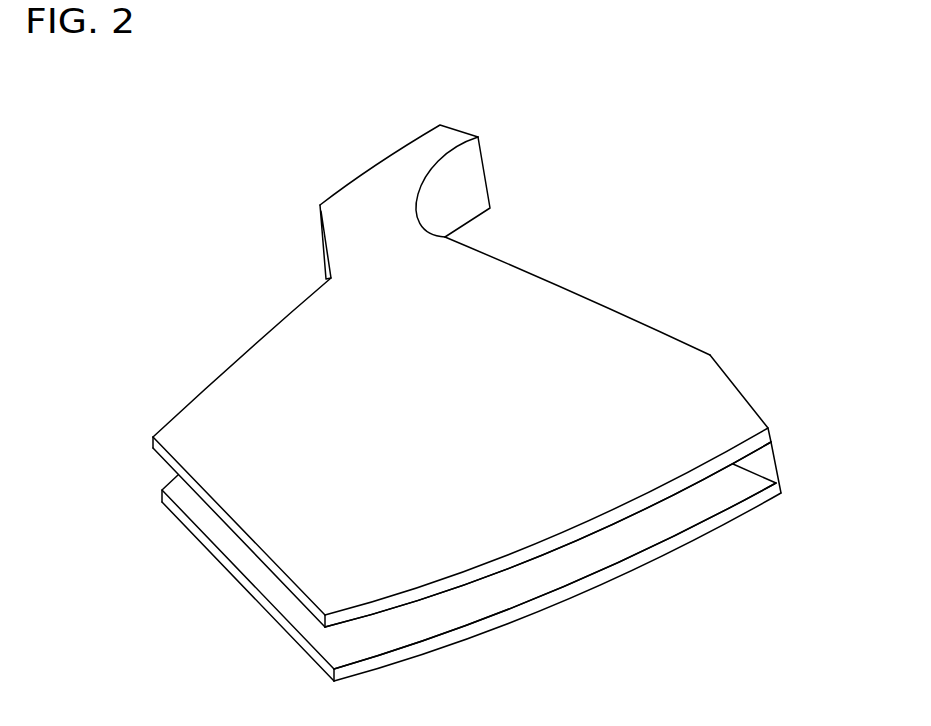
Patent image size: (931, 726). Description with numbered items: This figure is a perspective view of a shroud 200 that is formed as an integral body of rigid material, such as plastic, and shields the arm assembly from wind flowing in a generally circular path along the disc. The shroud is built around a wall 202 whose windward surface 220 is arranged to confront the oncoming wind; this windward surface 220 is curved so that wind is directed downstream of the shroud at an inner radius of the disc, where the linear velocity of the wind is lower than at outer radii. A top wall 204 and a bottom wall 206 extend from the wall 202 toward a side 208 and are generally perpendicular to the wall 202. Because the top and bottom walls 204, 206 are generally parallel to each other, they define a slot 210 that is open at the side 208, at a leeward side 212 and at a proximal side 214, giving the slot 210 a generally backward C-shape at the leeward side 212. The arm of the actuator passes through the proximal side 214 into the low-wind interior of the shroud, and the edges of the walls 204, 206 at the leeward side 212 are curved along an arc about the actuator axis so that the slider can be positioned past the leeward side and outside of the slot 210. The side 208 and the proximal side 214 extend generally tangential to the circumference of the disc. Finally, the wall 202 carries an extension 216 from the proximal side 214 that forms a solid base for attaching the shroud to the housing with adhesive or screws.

The shroud 200 is at (638, 267).
The wall 202 is at (759, 486).
The top wall 204 is at (712, 422).
The bottom wall 206 is at (535, 610).
The side 208 is at (232, 545).
The slot 210 is at (620, 545).
The leeward side 212 is at (383, 605).
The proximal side 214 is at (248, 348).
The extension 216 is at (467, 189).
The windward surface 220 is at (668, 333).